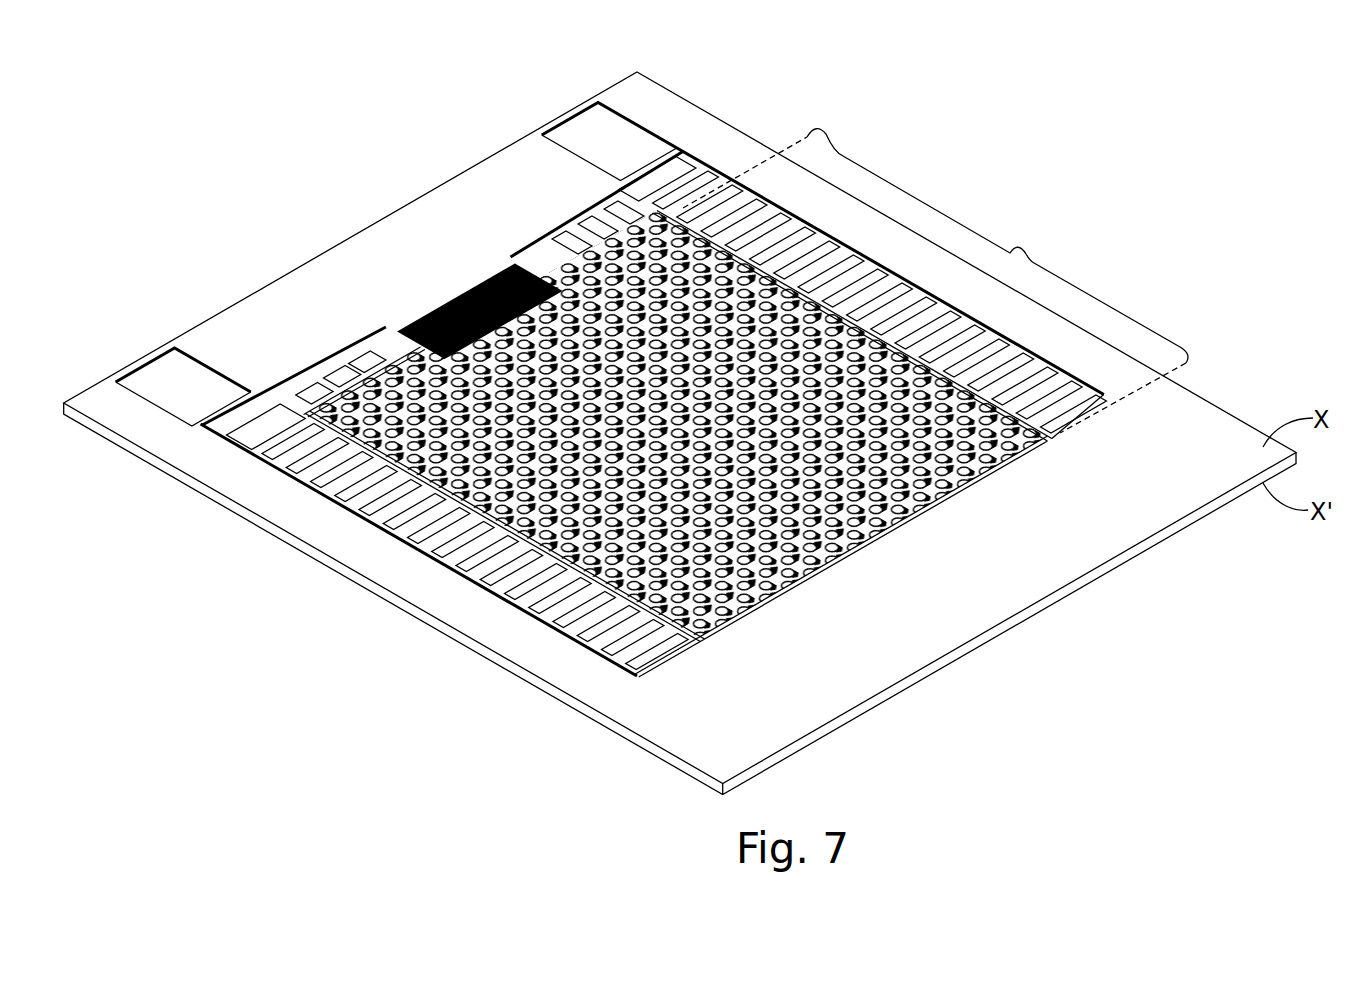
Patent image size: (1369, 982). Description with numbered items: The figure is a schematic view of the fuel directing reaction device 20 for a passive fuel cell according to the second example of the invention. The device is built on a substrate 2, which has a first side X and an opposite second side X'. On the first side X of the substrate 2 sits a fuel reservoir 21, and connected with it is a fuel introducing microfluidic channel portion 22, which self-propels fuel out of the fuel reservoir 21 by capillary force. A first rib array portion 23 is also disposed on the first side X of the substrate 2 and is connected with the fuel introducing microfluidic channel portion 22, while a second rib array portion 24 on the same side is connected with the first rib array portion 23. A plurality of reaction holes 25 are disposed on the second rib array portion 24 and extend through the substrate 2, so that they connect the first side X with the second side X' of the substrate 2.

The substrate 2 is at (1217, 430).
The fuel directing reaction device 20 is at (168, 152).
The fuel reservoir 21 is at (372, 255).
The fuel introducing microfluidic channel portion 22 is at (481, 265).
The first rib array portion 23 is at (776, 163).
The second rib array portion 24 is at (1015, 294).
The reaction holes 25 is at (1020, 455).